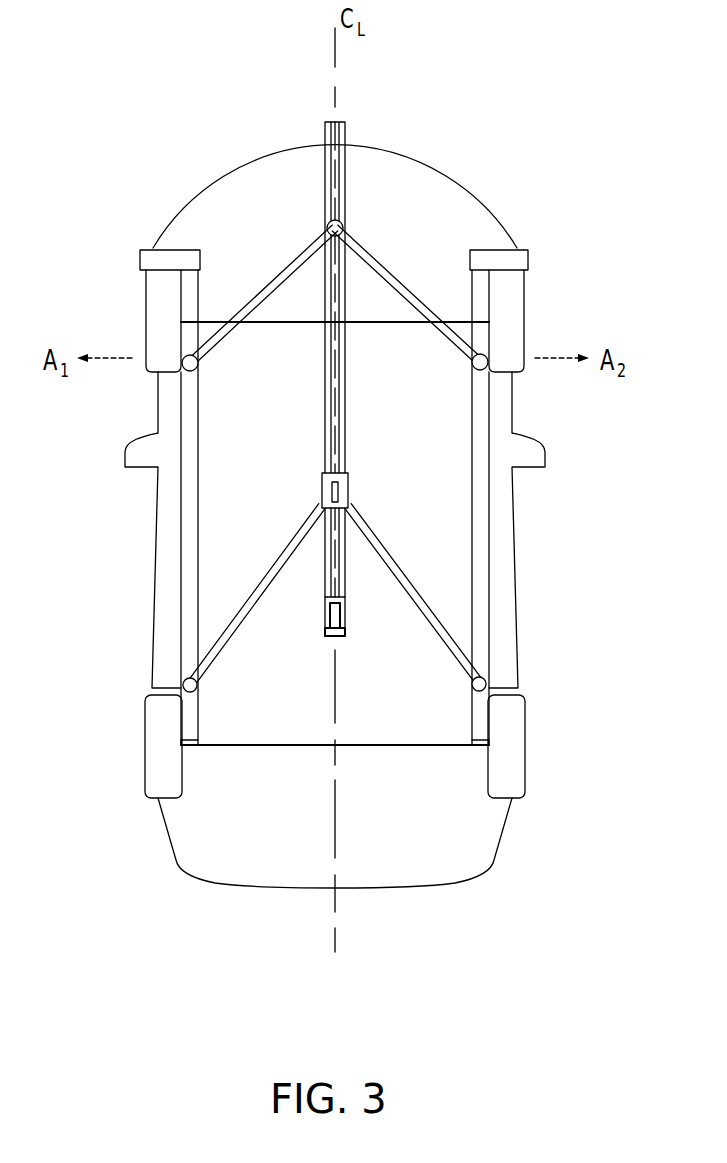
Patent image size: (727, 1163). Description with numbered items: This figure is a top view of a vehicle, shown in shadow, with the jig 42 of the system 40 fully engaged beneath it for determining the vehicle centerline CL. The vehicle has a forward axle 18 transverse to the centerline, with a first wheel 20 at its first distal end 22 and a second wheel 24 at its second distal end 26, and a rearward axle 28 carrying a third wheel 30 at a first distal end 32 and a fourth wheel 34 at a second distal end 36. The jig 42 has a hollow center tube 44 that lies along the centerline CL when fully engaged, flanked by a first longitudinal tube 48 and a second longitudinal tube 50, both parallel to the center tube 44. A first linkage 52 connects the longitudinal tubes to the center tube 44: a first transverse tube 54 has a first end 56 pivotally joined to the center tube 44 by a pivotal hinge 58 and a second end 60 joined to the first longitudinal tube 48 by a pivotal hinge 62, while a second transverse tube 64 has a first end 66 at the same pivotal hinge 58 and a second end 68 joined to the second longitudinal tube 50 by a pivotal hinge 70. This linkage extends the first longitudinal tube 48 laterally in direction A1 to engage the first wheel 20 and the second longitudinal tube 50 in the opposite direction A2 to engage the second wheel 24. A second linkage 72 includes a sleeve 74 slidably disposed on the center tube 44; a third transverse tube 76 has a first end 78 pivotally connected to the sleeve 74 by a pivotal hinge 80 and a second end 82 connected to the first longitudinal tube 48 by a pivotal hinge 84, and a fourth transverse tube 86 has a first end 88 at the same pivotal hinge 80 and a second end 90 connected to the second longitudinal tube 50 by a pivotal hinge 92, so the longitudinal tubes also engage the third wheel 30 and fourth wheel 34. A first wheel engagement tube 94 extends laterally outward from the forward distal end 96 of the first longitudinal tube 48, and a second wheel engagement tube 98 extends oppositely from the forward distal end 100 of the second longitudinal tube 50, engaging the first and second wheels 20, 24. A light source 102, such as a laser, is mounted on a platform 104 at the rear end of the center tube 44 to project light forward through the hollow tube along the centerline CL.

The forward axle 18 is at (225, 308).
The first wheel 20 is at (146, 341).
The first distal end 22 is at (187, 338).
The second wheel 24 is at (528, 322).
The second distal end 26 is at (481, 338).
The rearward axle 28 is at (317, 747).
The third wheel 30 is at (155, 770).
The first distal end 32 is at (191, 766).
The fourth wheel 34 is at (526, 738).
The second distal end 36 is at (478, 766).
The system 40 is at (174, 124).
The jig 42 is at (507, 452).
The center tube 44 is at (344, 137).
The first longitudinal tube 48 is at (188, 457).
The second longitudinal tube 50 is at (480, 532).
The first linkage 52 is at (400, 272).
The first transverse tube 54 is at (277, 277).
The first end 56 is at (326, 226).
The pivotal hinge 58 is at (364, 228).
The second end 60 is at (192, 372).
The pivotal hinge 62 is at (212, 350).
The second transverse tube 64 is at (471, 283).
The first end 66 is at (350, 222).
The second end 68 is at (460, 342).
The pivotal hinge 70 is at (470, 372).
The second linkage 72 is at (418, 574).
The sleeve 74 is at (322, 490).
The third transverse tube 76 is at (235, 622).
The first end 78 is at (290, 548).
The pivotal hinge 80 is at (325, 500).
The second end 82 is at (210, 657).
The pivotal hinge 84 is at (183, 683).
The fourth transverse tube 86 is at (393, 563).
The first end 88 is at (348, 500).
The second end 90 is at (458, 655).
The pivotal hinge 92 is at (490, 685).
The first wheel engagement tube 94 is at (153, 250).
The forward distal end 96 is at (188, 277).
The second wheel engagement tube 98 is at (528, 260).
The forward distal end 100 is at (515, 262).
The light source 102 is at (340, 622).
The platform 104 is at (327, 638).